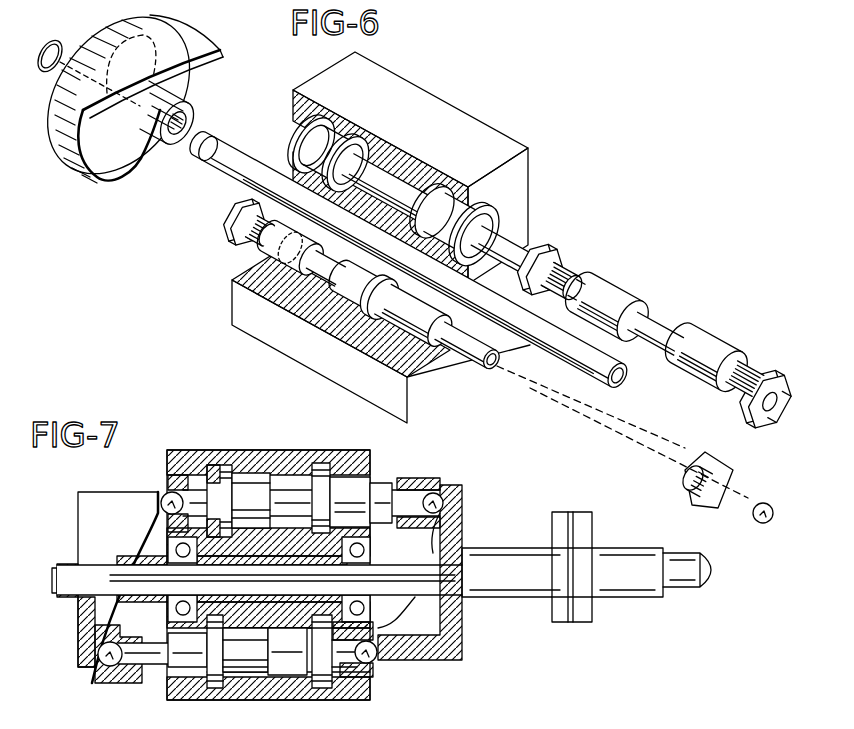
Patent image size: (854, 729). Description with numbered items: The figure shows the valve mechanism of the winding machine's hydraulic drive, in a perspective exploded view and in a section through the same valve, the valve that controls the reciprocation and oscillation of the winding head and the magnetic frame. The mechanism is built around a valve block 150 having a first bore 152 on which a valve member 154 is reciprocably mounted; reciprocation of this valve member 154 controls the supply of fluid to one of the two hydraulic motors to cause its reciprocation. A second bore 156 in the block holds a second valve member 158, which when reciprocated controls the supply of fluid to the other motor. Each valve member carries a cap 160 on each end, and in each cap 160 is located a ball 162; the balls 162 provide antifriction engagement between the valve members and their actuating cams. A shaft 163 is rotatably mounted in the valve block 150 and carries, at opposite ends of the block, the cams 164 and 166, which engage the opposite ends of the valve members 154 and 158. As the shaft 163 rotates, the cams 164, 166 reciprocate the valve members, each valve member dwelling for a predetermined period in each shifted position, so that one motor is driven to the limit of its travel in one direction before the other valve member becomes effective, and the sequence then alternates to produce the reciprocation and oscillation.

In FIG. 6, the valve block 150 is at (508, 147).
In FIG. 7, the valve block 150 is at (195, 458).
In FIG. 6, the first bore 152 is at (440, 103).
In FIG. 7, the first bore 152 is at (303, 478).
In FIG. 6, the valve member 154 is at (613, 293).
In FIG. 7, the valve member 154 is at (370, 487).
In FIG. 6, the second bore 156 is at (352, 340).
In FIG. 7, the second bore 156 is at (252, 672).
In FIG. 6, the valve member 158 is at (493, 372).
In FIG. 7, the valve member 158 is at (185, 660).
In FIG. 6, the cap 160 is at (550, 247).
In FIG. 7, the cap 160 is at (440, 480).
In FIG. 6, the ball 162 is at (765, 520).
In FIG. 7, the ball 162 is at (424, 515).
In FIG. 6, the shaft 163 is at (606, 384).
In FIG. 7, the shaft 163 is at (462, 540).
In FIG. 6, the cam 164 is at (195, 45).
In FIG. 7, the cam 164 is at (100, 494).
In FIG. 7, the cam 166 is at (465, 640).